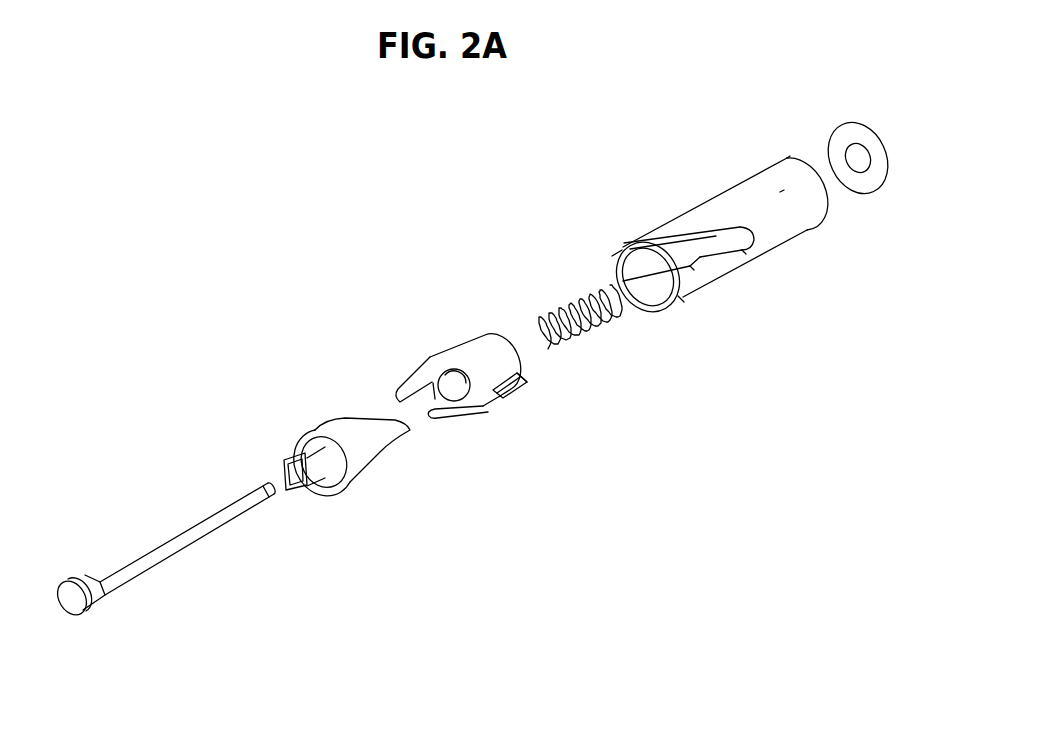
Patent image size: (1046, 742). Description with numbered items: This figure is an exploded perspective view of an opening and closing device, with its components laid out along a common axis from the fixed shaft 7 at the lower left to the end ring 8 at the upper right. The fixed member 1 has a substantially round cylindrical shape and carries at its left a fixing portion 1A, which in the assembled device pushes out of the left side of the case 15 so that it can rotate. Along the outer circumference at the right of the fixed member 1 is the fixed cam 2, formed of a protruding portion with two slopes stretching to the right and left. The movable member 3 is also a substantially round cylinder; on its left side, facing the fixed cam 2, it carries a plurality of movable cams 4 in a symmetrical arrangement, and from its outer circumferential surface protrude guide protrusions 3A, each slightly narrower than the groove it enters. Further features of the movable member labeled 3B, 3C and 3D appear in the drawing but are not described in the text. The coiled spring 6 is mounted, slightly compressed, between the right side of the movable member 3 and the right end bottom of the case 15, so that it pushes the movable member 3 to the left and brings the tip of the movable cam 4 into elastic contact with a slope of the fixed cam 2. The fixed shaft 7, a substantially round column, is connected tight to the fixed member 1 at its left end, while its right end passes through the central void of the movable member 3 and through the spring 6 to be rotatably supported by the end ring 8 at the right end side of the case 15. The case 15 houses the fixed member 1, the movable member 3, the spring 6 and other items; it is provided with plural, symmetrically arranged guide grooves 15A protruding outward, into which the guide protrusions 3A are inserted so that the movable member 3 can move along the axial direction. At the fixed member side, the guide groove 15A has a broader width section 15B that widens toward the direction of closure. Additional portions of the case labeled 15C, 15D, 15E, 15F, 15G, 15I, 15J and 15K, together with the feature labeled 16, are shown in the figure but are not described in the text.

The fixed member 1 is at (320, 465).
The fixing portion 1A is at (302, 452).
The fixed cam 2 is at (387, 440).
The movable member 3 is at (509, 386).
The guide protrusion 3A is at (522, 395).
The foot of collet 3B is at (475, 405).
The step of key projection 3C is at (522, 373).
The edge of key projection 3D is at (522, 392).
The movable cam 4 is at (450, 412).
The spring 6 is at (553, 283).
The fixed shaft 7 is at (187, 540).
The end ring 8 is at (838, 130).
The case 15 is at (715, 245).
The guide groove 15A is at (740, 260).
The broader width section 15B is at (697, 285).
The rear end of housing 15C is at (802, 160).
The housing wall 15D is at (763, 228).
The step of slot 15E is at (707, 267).
The upper edge of slot 15F is at (737, 230).
The slot portion 15G is at (750, 263).
The slot wall 15I is at (660, 232).
The notch of housing 15J is at (683, 297).
The front rim of housing 15K is at (610, 255).
The rib 16 is at (713, 237).